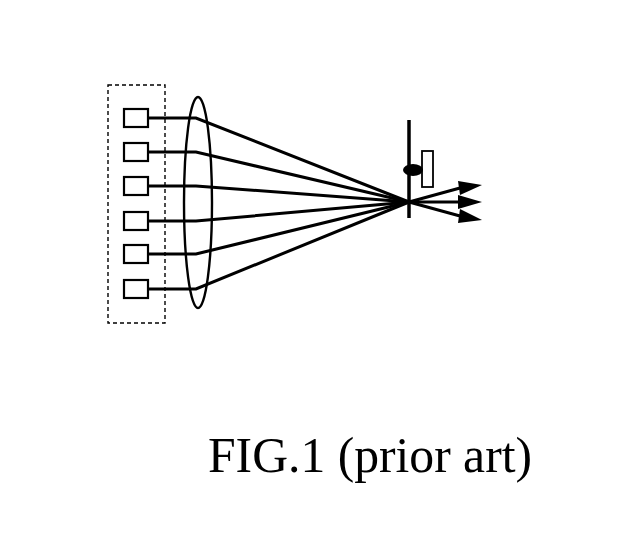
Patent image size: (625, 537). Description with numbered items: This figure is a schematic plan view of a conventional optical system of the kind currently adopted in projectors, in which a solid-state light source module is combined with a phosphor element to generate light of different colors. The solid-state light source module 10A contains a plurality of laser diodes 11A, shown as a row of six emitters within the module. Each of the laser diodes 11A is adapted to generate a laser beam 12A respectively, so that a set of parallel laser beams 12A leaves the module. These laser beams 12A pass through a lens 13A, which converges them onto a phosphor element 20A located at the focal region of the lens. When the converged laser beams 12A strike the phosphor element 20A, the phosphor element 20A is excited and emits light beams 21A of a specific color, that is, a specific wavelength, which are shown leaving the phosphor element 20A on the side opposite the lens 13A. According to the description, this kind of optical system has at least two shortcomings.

The solid-state light source module 10A is at (107, 78).
The laser diodes 11A is at (132, 108).
The laser beam 12A is at (255, 263).
The lens 13A is at (208, 108).
The phosphor element 20A is at (409, 115).
The light beams 21A is at (441, 208).